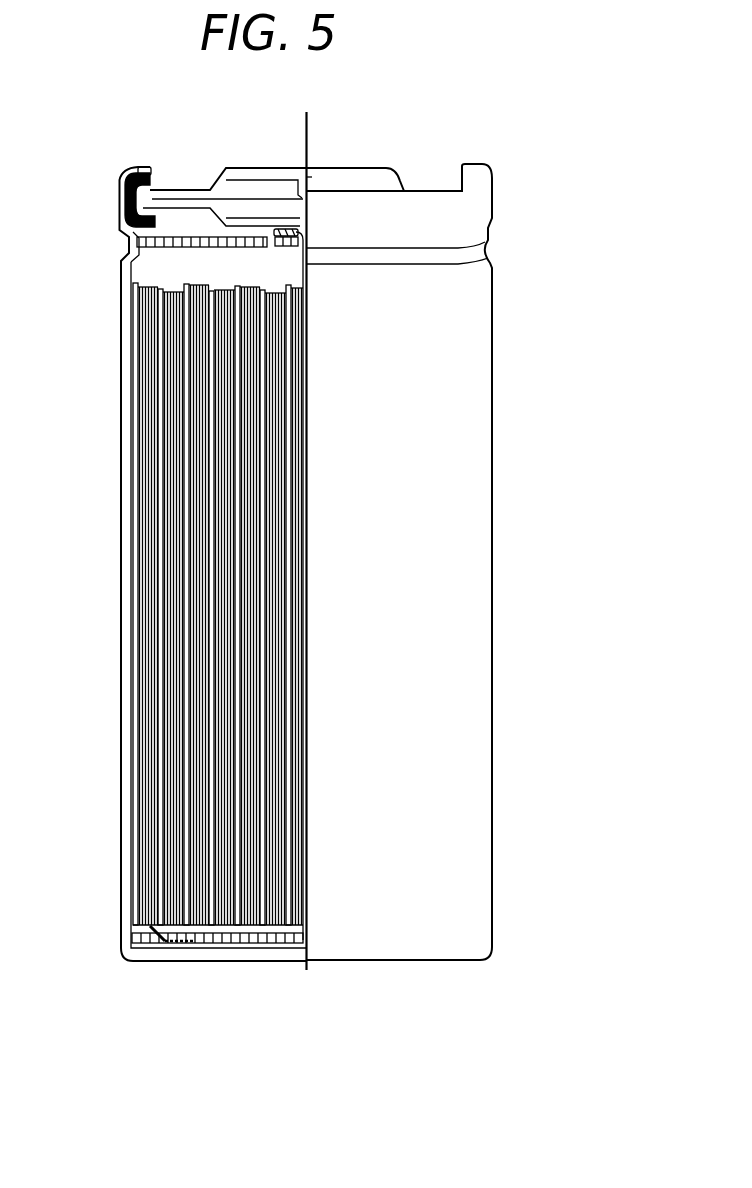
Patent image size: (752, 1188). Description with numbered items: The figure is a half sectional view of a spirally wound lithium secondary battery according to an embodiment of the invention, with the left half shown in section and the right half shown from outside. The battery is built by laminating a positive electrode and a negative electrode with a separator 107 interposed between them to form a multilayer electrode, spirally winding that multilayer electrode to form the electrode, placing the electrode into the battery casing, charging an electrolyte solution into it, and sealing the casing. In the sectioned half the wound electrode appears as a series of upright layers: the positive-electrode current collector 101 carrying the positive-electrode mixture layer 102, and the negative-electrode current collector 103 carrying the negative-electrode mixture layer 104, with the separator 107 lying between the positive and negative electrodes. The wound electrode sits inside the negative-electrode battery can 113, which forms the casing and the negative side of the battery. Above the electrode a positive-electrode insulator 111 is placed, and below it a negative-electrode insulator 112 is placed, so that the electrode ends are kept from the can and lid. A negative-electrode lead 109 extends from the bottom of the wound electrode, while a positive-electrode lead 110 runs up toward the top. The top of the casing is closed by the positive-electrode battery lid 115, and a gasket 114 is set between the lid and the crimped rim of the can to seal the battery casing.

The positive-electrode current collector 101 is at (143, 325).
The positive-electrode mixture layer 102 is at (142, 340).
The negative-electrode current collector 103 is at (142, 442).
The negative-electrode mixture layer 104 is at (142, 463).
The separator 107 is at (137, 557).
The negative-electrode lead 109 is at (180, 945).
The positive-electrode lead 110 is at (281, 232).
The positive-electrode insulator 111 is at (137, 243).
The negative-electrode insulator 112 is at (245, 945).
The negative-electrode battery can 113 is at (128, 200).
The gasket 114 is at (138, 168).
The positive-electrode battery lid 115 is at (172, 192).